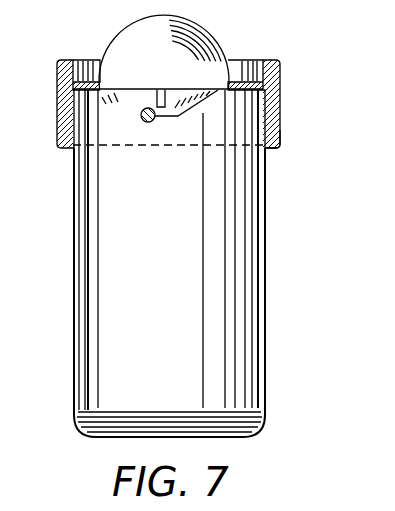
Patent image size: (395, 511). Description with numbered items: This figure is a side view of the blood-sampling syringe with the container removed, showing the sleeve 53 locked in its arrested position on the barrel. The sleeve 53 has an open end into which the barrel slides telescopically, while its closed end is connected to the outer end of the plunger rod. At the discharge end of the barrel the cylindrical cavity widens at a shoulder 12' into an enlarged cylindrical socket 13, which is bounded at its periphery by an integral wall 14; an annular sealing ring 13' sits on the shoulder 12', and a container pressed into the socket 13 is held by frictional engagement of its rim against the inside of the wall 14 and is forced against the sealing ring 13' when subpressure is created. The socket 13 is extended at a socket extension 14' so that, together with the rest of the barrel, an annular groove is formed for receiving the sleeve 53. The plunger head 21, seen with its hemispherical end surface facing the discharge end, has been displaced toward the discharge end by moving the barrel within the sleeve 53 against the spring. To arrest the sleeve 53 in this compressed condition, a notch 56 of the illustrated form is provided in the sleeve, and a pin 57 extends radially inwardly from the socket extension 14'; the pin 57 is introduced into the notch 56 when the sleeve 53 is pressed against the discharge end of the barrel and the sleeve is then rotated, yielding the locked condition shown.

The socket or sleeve 53 is at (243, 254).
The shoulder 12' is at (44, 104).
The socket 13 is at (75, 57).
The annular sealing ring 13' is at (251, 56).
The wall 14 is at (289, 88).
The socket extension 14' is at (293, 153).
The plunger head 21 is at (137, 33).
The notch 56 is at (190, 105).
The pin 57 is at (147, 108).